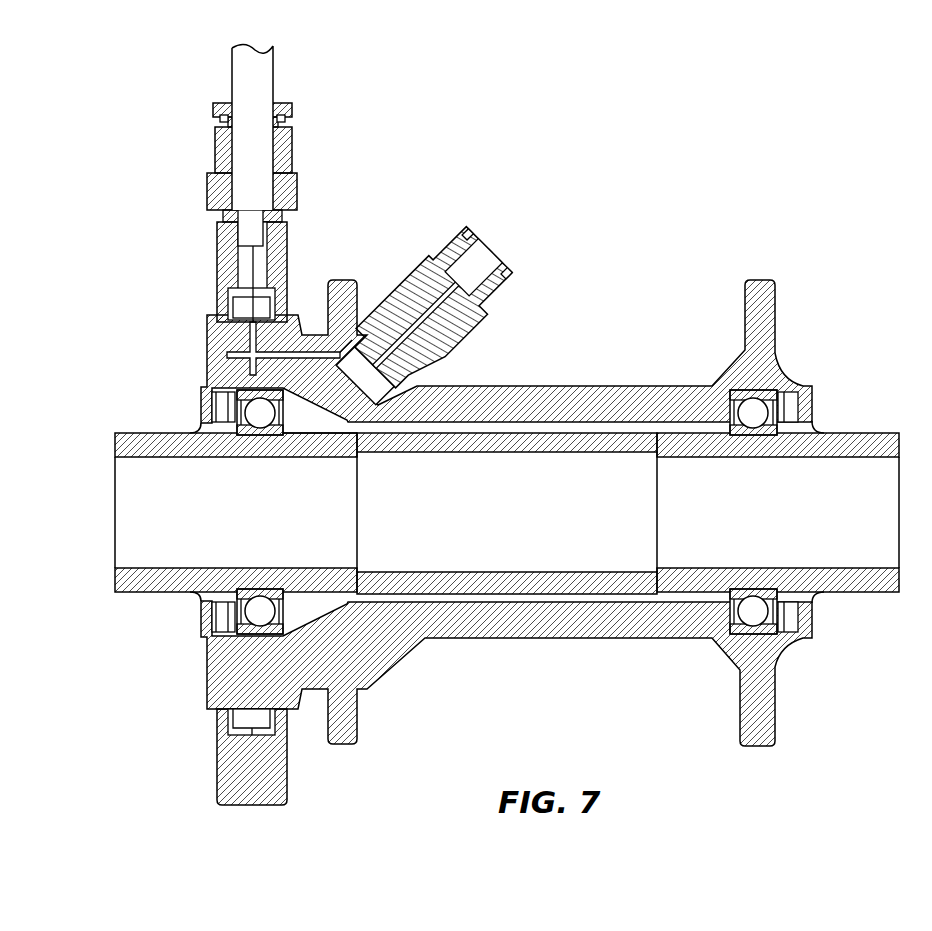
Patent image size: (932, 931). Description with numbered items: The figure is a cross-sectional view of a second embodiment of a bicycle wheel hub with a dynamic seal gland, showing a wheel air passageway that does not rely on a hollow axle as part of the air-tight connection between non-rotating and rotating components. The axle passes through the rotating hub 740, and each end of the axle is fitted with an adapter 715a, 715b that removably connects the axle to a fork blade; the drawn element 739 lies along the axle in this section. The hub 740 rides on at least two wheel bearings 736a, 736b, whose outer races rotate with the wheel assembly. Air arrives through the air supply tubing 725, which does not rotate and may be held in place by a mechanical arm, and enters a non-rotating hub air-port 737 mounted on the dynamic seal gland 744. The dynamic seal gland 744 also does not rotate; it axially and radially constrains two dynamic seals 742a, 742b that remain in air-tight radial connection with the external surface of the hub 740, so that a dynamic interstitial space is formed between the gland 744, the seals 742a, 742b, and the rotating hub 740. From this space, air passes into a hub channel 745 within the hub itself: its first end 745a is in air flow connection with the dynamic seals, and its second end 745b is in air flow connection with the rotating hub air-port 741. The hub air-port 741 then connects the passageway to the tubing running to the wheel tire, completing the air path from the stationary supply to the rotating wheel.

The air supply tubing 725 is at (276, 82).
The non-rotating hub air-port 737 is at (282, 136).
The hub channel 745 is at (302, 322).
The first end of hub channel 745a is at (253, 263).
The second end of hub channel 745b is at (352, 335).
The rotating hub air-port 741 is at (468, 322).
The hub 740 is at (648, 386).
The sleeve 739 is at (523, 594).
The adapter 715a is at (152, 433).
The adapter 715b is at (868, 433).
The wheel bearing 736a is at (253, 430).
The wheel bearing 736b is at (753, 436).
The dynamic seal 742a is at (220, 296).
The dynamic seal 742b is at (300, 434).
The dynamic seal gland 744 is at (213, 302).